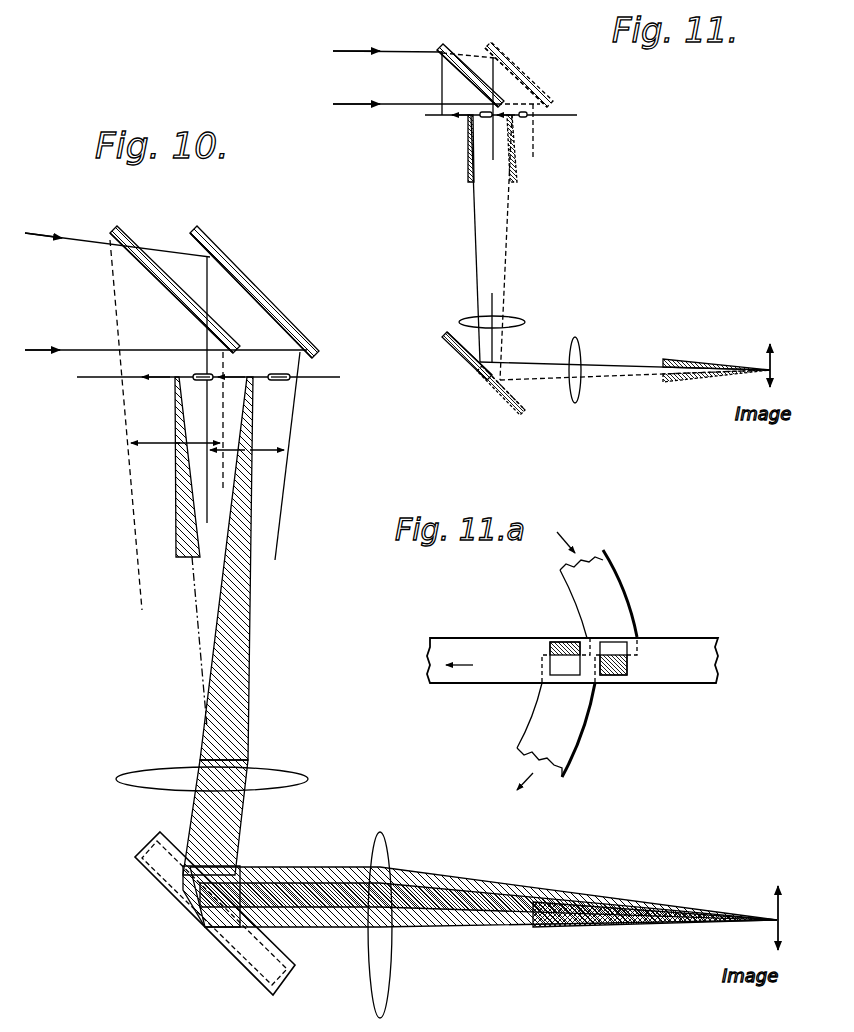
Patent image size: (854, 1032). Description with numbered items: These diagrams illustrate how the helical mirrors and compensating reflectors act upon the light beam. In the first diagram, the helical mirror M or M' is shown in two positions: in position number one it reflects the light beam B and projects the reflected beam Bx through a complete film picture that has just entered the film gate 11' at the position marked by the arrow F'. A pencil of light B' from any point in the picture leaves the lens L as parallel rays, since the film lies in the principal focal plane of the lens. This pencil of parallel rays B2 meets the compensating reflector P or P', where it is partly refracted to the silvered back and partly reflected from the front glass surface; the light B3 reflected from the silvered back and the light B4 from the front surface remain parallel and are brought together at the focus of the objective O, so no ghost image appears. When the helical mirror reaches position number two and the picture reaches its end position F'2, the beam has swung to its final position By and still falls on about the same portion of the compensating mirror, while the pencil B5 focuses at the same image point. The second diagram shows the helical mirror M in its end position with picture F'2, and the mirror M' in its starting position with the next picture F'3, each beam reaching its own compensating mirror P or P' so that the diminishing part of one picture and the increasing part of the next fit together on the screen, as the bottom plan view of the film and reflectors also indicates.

In FIG. 10, the light beam B is at (166, 421).
In FIG. 11, the light beam B is at (436, 105).
In FIG. 10, the pencil of light B' is at (241, 568).
In FIG. 10, the pencil of parallel rays B2 is at (238, 815).
In FIG. 10, the light reflected from back silvered surface B3 is at (340, 928).
In FIG. 10, the light from front surface of mirror B4 is at (330, 867).
In FIG. 10, the pencil of rays B5 is at (177, 527).
In FIG. 10, the reflected beam Bx is at (247, 451).
In FIG. 10, the final position of reflected beam By is at (175, 446).
In FIG. 10, the film picture F' is at (276, 367).
In FIG. 11a, the film picture F' is at (590, 660).
In FIG. 10, the film picture end position F'2 is at (186, 365).
In FIG. 11, the film picture end position F'2 is at (456, 237).
In FIG. 11a, the film picture end position F'2 is at (562, 642).
In FIG. 11, the next succeeding film picture F'3 is at (537, 246).
In FIG. 11a, the next succeeding film picture F'3 is at (627, 683).
In FIG. 10, the lens L is at (270, 775).
In FIG. 11, the lens L is at (513, 318).
In FIG. 10, the objective O is at (380, 915).
In FIG. 11, the objective O is at (580, 353).
In FIG. 10, the film gate 11' is at (208, 397).
In FIG. 11, the film gate 11' is at (494, 128).
In FIG. 10, the compensating reflector P is at (215, 919).
In FIG. 11, the compensating reflector P is at (552, 364).
In FIG. 11, the compensating reflector P' is at (561, 403).
In FIG. 10, the helical mirror M is at (207, 273).
In FIG. 11, the helical mirror M is at (444, 56).
In FIG. 11a, the helical mirror M is at (539, 736).
In FIG. 11, the helical mirror M' is at (590, 74).
In FIG. 11a, the helical mirror M' is at (608, 585).